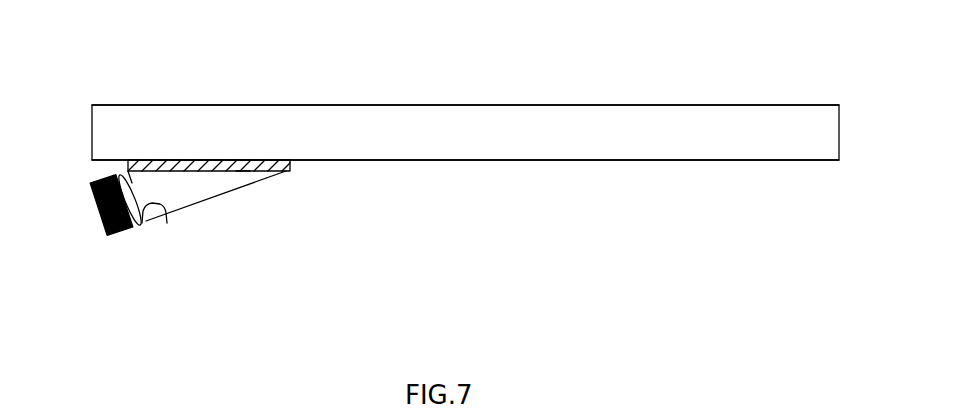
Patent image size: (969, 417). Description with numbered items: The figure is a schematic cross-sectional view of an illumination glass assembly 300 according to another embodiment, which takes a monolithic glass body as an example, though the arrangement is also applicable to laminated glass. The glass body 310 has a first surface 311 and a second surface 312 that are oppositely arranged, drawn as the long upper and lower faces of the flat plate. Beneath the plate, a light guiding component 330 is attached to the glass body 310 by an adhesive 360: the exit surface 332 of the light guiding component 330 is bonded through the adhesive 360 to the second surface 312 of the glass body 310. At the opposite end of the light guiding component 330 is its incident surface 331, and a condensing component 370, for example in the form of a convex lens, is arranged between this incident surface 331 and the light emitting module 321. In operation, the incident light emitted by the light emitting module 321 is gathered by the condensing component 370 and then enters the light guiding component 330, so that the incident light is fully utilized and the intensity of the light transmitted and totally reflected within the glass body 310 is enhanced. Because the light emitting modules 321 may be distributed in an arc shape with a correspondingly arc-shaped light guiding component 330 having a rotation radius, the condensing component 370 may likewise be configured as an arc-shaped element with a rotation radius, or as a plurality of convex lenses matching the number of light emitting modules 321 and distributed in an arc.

The illumination glass assembly 300 is at (480, 31).
The glass body 310 is at (733, 146).
The first surface 311 is at (618, 106).
The second surface 312 is at (633, 161).
The light emitting module 321 is at (122, 233).
The light guiding component 330 is at (193, 197).
The incident surface 331 is at (162, 210).
The exit surface 332 is at (243, 172).
The adhesive 360 is at (290, 165).
The condensing component 370 is at (118, 176).